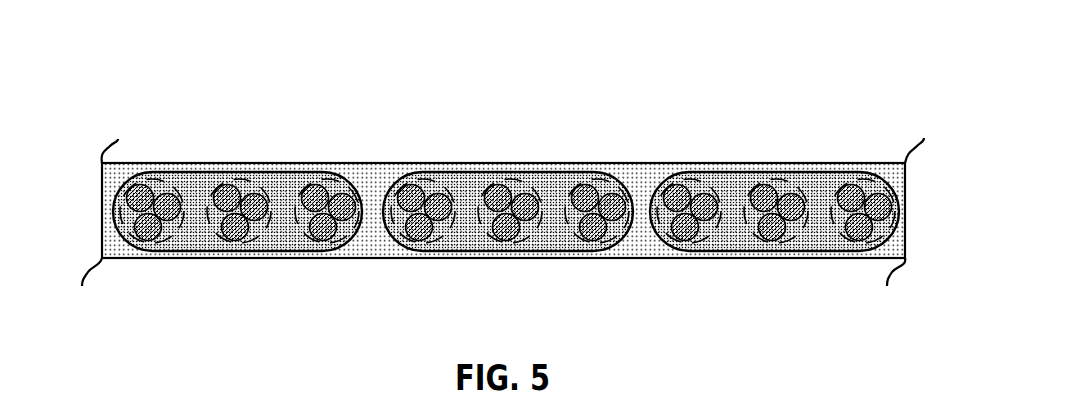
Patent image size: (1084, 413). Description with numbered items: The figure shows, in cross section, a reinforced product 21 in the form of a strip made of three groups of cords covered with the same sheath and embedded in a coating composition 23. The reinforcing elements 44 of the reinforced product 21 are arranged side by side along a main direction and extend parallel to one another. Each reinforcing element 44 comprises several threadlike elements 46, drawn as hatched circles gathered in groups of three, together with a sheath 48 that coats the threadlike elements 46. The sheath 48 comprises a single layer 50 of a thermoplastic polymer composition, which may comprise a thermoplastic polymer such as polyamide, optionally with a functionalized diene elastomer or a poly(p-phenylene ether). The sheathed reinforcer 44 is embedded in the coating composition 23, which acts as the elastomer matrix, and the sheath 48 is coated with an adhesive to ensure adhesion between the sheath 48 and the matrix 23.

The reinforced product 21 is at (197, 75).
The coating composition 23 is at (373, 171).
The reinforcing element 44 is at (261, 158).
The threadlike element 46 is at (296, 229).
The sheath 48 is at (542, 166).
The layer 50 is at (567, 180).